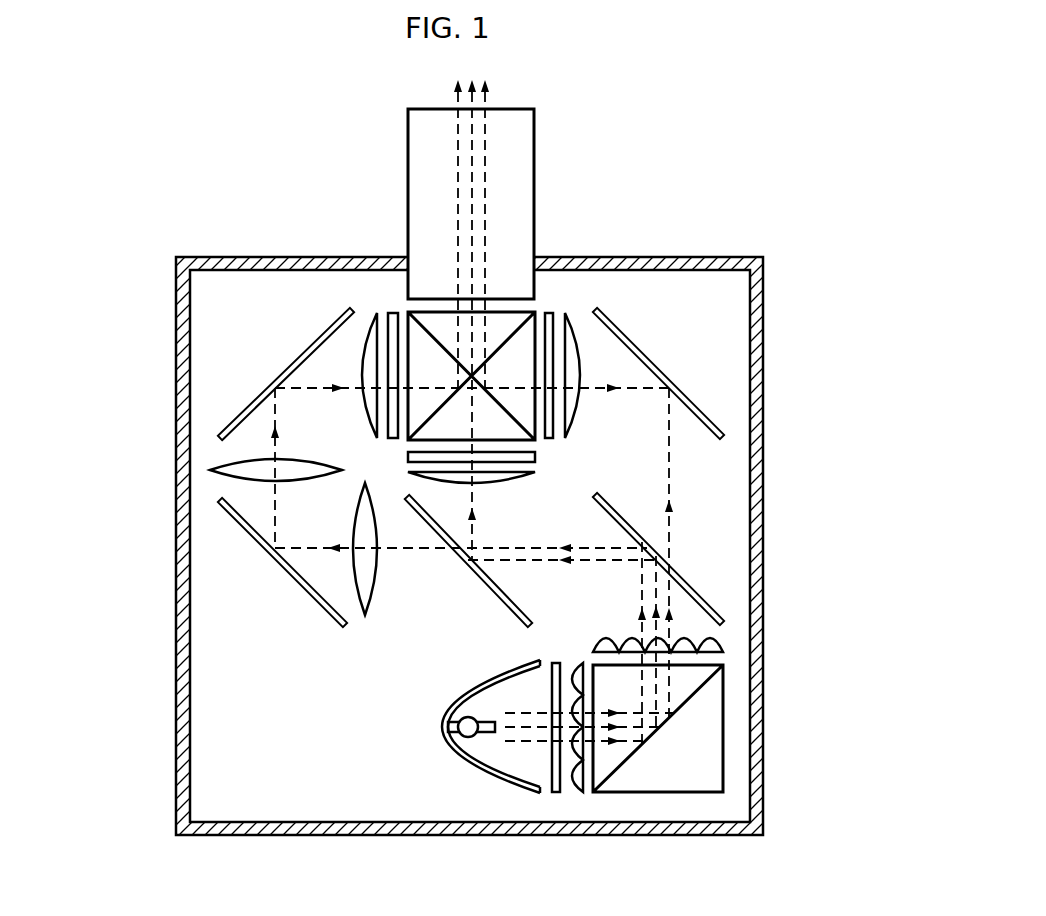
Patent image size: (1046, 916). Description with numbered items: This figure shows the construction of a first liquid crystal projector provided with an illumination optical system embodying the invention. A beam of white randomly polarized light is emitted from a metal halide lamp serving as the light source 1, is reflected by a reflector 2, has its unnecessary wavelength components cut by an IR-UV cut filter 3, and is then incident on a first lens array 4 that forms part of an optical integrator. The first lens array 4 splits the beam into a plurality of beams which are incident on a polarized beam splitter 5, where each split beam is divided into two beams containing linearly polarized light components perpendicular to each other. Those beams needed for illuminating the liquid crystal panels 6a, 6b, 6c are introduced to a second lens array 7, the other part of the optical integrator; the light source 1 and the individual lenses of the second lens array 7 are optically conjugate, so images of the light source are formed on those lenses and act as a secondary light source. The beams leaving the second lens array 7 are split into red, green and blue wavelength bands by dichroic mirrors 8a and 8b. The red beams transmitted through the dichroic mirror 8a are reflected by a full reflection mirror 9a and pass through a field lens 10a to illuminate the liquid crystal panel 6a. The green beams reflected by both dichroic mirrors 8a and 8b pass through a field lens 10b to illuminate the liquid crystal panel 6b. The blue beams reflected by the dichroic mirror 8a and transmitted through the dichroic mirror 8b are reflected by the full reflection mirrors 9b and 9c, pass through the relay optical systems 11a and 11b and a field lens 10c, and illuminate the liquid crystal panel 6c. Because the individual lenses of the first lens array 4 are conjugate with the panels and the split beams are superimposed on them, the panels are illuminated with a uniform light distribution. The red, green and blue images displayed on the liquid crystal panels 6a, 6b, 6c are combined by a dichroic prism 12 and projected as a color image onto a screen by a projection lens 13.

The light source 1 is at (455, 740).
The reflector 2 is at (468, 785).
The IR-UV cut filter 3 is at (556, 795).
The first lens array 4 is at (578, 795).
The polarized beam splitter 5 is at (672, 778).
The liquid crystal panel 6a is at (548, 312).
The liquid crystal panel 6b is at (537, 455).
The liquid crystal panel 6c is at (393, 312).
The second lens array 7 is at (723, 645).
The dichroic mirror 8a is at (705, 600).
The dichroic mirror 8b is at (503, 607).
The full reflection mirror 9a is at (707, 415).
The full reflection mirror 9b is at (245, 525).
The full reflection mirror 9c is at (228, 428).
The field lens 10a is at (566, 312).
The field lens 10b is at (538, 477).
The field lens 10c is at (372, 316).
The relay optical system 11a is at (362, 618).
The relay optical system 11b is at (215, 470).
The dichroic prism 12 is at (541, 312).
The projection lens 13 is at (528, 128).